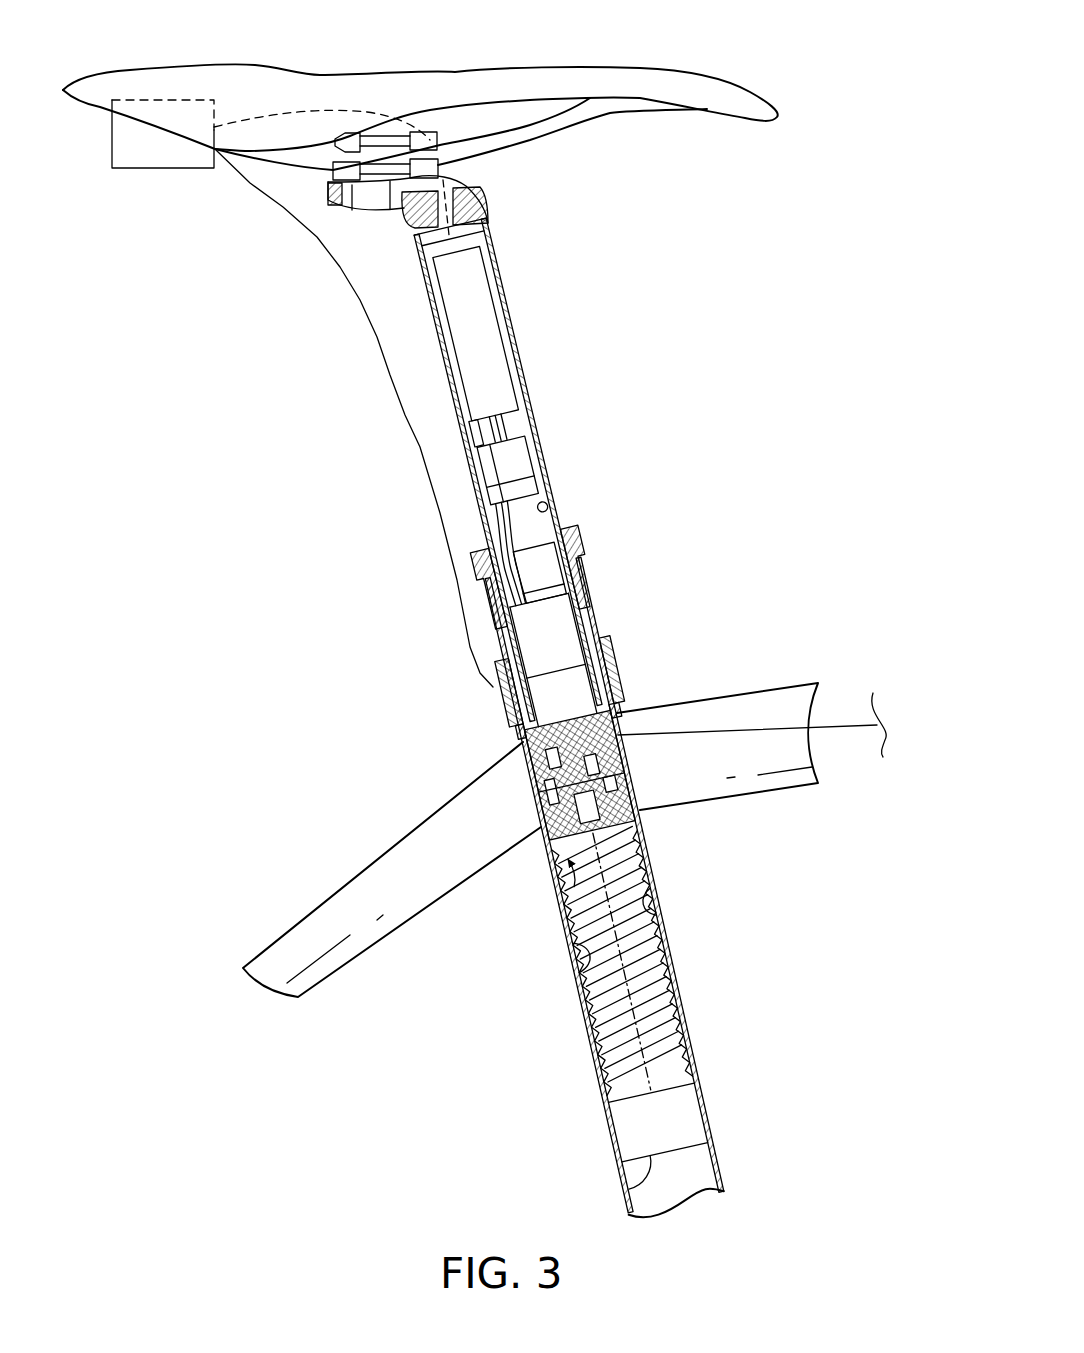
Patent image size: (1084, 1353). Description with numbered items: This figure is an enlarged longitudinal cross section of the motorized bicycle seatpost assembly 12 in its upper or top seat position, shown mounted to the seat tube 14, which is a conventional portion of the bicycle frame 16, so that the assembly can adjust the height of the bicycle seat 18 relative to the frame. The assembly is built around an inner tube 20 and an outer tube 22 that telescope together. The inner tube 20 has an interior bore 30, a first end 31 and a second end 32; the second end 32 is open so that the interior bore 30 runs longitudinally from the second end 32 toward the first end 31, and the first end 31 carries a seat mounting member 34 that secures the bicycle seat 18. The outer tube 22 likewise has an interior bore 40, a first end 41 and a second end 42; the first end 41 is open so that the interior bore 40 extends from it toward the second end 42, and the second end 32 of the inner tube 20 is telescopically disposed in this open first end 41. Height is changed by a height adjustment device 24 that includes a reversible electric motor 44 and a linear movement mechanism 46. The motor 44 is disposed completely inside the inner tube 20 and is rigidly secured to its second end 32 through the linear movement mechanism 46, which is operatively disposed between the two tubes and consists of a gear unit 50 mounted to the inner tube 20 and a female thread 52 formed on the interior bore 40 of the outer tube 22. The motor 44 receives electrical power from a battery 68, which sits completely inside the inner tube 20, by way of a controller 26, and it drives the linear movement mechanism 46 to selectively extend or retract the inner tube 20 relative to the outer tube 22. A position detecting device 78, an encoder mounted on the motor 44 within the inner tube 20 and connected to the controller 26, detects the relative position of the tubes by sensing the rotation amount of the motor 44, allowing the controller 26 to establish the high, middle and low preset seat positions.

The motorized bicycle seatpost assembly 12 is at (268, 422).
The seat tube 14 is at (688, 1172).
The bicycle frame 16 is at (763, 686).
The bicycle seat 18 is at (548, 60).
The inner tube 20 is at (533, 424).
The outer tube 22 is at (660, 1120).
The height adjustment device 24 is at (590, 681).
The controller 26 is at (153, 172).
The interior bore 30 is at (546, 512).
The first end 31 is at (484, 206).
The second end 32 is at (589, 697).
The seat mounting member 34 is at (476, 192).
The interior bore 40 is at (645, 910).
The first end 41 is at (565, 583).
The second end 42 is at (627, 1192).
The reversible electric motor 44 is at (549, 648).
The linear movement mechanism 46 is at (622, 763).
The gear unit 50 is at (567, 896).
The female thread 52 is at (580, 980).
The battery 68 is at (476, 326).
The position detecting device 78 is at (531, 575).